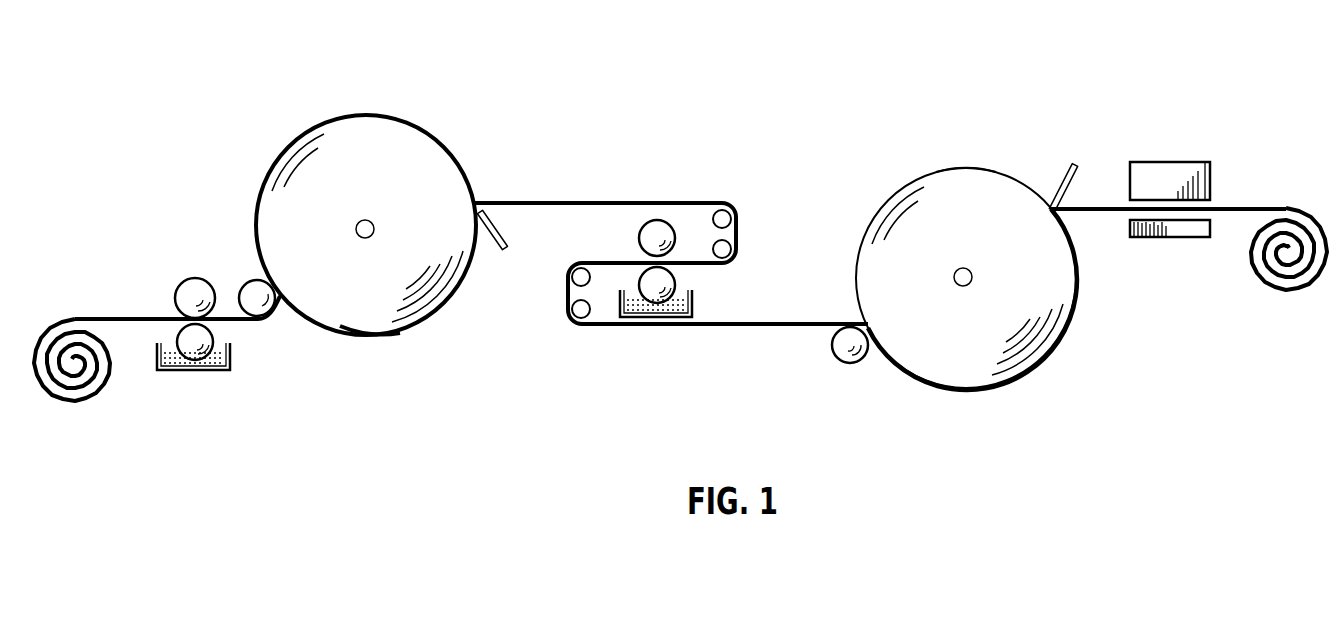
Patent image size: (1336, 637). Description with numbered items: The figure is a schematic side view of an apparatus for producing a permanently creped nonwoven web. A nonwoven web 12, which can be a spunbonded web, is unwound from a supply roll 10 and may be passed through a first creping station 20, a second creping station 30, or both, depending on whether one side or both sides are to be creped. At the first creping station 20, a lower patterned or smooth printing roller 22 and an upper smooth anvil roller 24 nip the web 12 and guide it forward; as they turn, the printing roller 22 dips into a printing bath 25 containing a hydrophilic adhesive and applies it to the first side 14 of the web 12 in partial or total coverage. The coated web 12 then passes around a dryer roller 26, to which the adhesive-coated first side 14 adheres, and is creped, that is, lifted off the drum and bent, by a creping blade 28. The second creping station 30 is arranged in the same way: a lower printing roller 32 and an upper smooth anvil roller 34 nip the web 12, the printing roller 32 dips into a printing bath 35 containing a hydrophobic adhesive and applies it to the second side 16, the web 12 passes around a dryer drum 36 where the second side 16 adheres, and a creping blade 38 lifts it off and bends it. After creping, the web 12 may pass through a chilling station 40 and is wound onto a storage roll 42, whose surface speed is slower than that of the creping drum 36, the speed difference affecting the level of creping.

The supply roll 10 is at (88, 400).
The nonwoven web 12 is at (133, 317).
The first side 14 is at (147, 323).
The second side 16 is at (610, 200).
The first creping station 20 is at (308, 121).
The printing roller 22 is at (213, 338).
The anvil roller 24 is at (193, 278).
The printing bath 25 is at (213, 372).
The dryer roller 26 is at (397, 332).
The creping blade 28 is at (493, 240).
The second creping station 30 is at (912, 168).
The printing roller 32 is at (675, 279).
The anvil roller 34 is at (640, 235).
The printing bath 35 is at (692, 302).
The dryer drum 36 is at (967, 167).
The creping blade 38 is at (1060, 175).
The chilling station 40 is at (1180, 167).
The storage roll 42 is at (1290, 290).